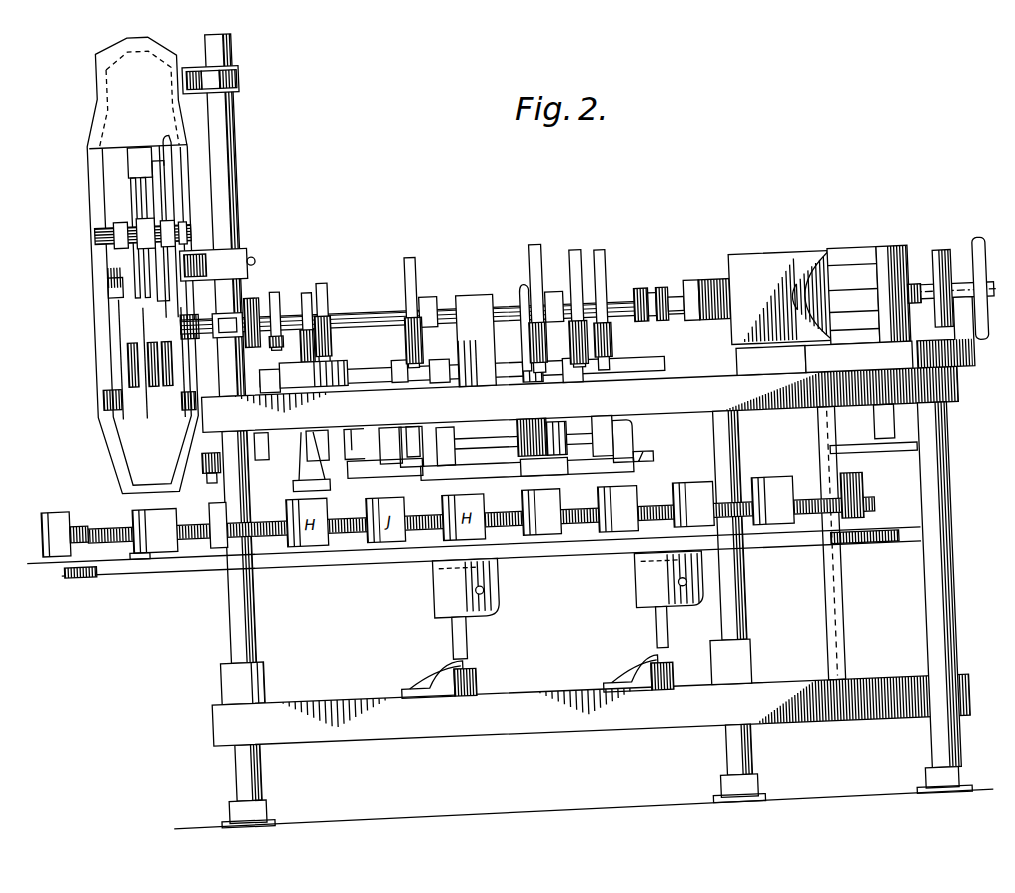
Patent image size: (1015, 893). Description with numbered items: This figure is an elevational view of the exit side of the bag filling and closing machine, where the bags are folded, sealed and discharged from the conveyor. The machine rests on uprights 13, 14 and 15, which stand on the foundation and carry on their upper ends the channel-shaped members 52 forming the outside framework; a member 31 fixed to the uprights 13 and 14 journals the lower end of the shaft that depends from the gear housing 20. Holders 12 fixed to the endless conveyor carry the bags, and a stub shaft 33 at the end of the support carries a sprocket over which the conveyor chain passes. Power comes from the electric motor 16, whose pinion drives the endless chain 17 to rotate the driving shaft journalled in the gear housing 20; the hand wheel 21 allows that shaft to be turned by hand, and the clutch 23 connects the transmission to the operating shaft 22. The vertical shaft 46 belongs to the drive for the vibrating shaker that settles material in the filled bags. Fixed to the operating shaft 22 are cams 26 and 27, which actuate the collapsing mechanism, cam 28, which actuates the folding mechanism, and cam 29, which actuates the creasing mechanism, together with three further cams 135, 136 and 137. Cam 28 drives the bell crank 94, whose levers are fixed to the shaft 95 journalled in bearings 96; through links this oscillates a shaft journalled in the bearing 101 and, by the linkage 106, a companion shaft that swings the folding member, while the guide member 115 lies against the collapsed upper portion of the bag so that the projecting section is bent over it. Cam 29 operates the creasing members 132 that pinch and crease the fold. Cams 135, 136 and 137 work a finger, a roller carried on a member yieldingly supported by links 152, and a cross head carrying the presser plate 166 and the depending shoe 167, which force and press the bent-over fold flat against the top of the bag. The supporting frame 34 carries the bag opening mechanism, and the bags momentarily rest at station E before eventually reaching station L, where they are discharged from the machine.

The supporting frame 34 is at (98, 190).
The upright 15 is at (247, 571).
The channel-shaped members 52 is at (771, 418).
The member 31 is at (337, 688).
The upright 14 is at (738, 572).
The upright 13 is at (947, 571).
The operating shaft 22 is at (366, 303).
The cam 137 is at (279, 279).
The cam 136 is at (311, 281).
The cam 135 is at (329, 275).
The bearings 96 is at (329, 351).
The cam 29 is at (416, 250).
The shaft 95 is at (513, 382).
The bell crank 94 is at (525, 285).
The cam 28 is at (540, 242).
The cam 27 is at (581, 249).
The cam 26 is at (607, 250).
The clutch 23 is at (668, 290).
The gear housing 20 is at (773, 262).
The electric motor 16 is at (848, 262).
The endless chain 17 is at (946, 264).
The hand wheel 21 is at (984, 253).
The bearing 101 is at (447, 421).
The creasing members 132 is at (360, 468).
The linkage 106 is at (562, 473).
The guide member 115 is at (643, 462).
The links 152 is at (300, 438).
The presser plate 166 is at (249, 481).
The depending shoe 167 is at (260, 470).
The station L is at (52, 490).
The stub shaft 33 is at (137, 540).
The holders 12 is at (605, 532).
The station E is at (862, 498).
The vertical shaft 46 is at (458, 627).